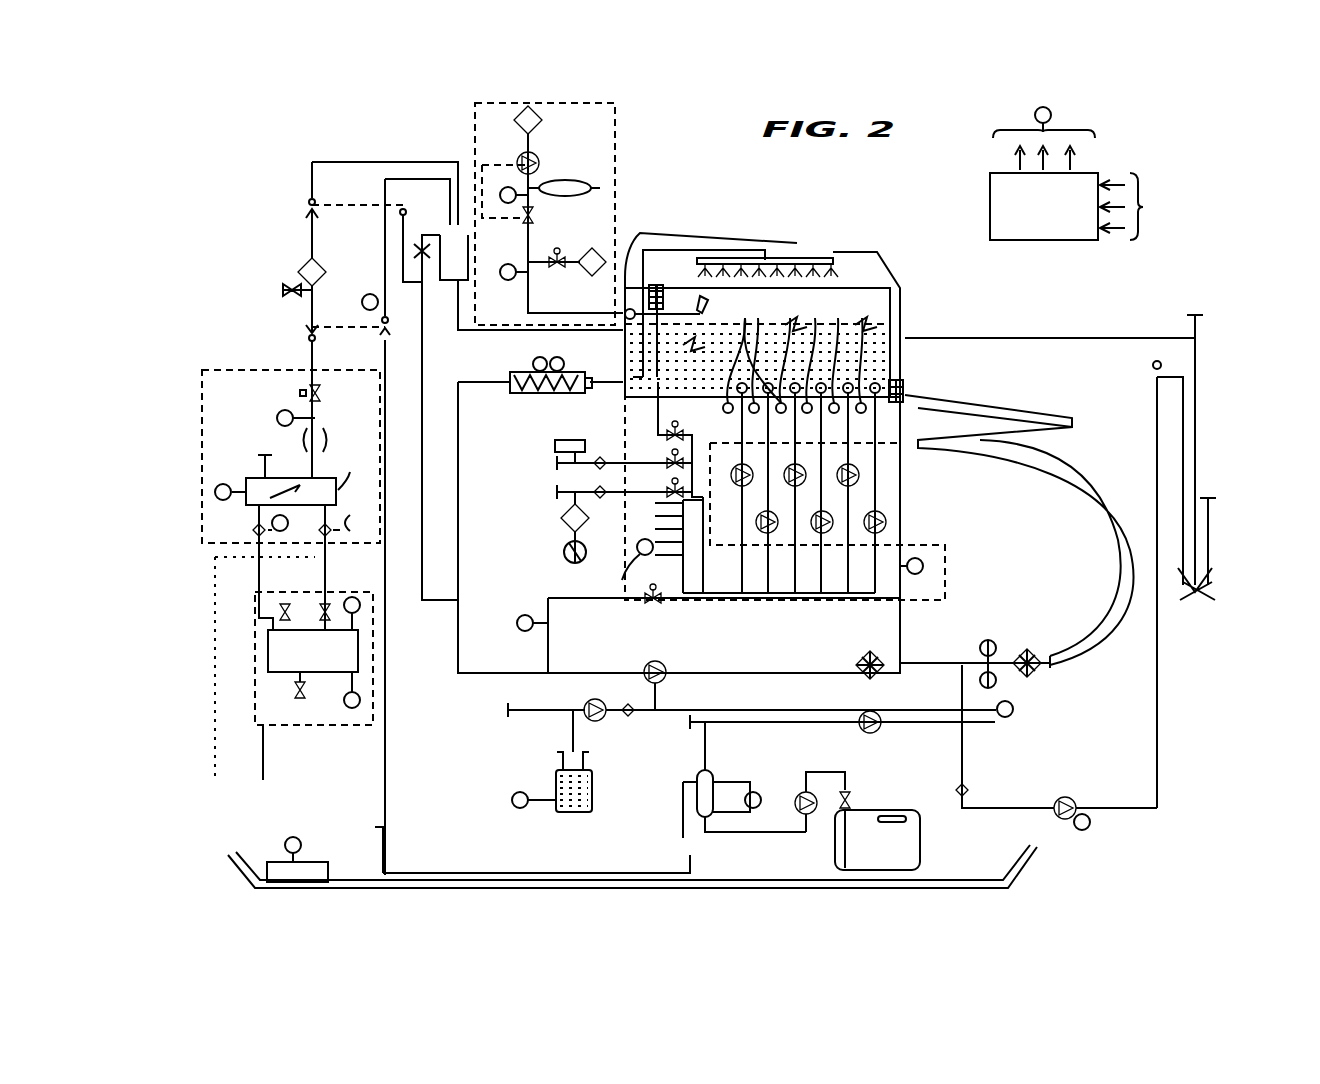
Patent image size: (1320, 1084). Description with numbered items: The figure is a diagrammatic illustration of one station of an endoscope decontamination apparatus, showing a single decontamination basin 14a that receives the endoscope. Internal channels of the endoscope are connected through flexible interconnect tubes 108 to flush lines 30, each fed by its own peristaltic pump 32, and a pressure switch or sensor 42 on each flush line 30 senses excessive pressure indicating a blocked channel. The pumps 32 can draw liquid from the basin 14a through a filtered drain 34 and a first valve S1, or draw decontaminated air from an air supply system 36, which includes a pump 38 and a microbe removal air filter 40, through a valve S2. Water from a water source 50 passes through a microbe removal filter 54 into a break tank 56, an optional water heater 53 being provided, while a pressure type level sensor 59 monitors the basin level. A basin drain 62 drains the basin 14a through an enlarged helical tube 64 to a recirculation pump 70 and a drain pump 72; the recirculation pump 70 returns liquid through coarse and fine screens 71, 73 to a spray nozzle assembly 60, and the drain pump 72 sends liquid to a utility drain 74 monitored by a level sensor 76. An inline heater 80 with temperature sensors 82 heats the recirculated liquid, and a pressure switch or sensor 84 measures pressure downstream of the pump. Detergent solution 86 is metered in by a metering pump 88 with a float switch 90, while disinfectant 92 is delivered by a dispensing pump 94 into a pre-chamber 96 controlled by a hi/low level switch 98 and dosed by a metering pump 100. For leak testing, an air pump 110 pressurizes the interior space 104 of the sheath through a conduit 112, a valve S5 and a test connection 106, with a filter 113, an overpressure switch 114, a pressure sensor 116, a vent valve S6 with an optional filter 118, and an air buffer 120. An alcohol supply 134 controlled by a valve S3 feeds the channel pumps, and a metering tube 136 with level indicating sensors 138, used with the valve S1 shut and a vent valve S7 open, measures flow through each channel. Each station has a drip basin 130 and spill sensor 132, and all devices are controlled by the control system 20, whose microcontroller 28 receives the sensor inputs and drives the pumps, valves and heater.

The decontamination basin 14a is at (898, 303).
The control system 20 is at (1066, 258).
The microcontroller 28 is at (1074, 173).
The flush lines 30 is at (735, 470).
The pumps 32 is at (738, 486).
The filtered drain 34 is at (905, 375).
The air supply system 36 is at (548, 580).
The pump 38 is at (564, 550).
The microbe removal air filter 40 is at (562, 515).
The pressure switch or sensor 42 is at (757, 330).
The water source 50 is at (204, 808).
The water heater 53 is at (338, 718).
The microbe removal filter 54 is at (322, 262).
The break tank 56 is at (452, 282).
The pressure type level sensor 59 is at (923, 566).
The spray nozzle assembly 60 is at (822, 255).
The basin drain 62 is at (905, 392).
The enlarged helical tube 64 is at (1068, 412).
The recirculation pump 70 is at (662, 662).
The coarse screen 71 is at (1033, 675).
The drain pump 72 is at (1072, 797).
The fine screen 73 is at (862, 675).
The utility drain 74 is at (1210, 585).
The level sensor 76 is at (993, 725).
The inline heater 80 is at (525, 393).
The temperature sensors 82 is at (533, 360).
The pressure switch or sensor 84 is at (520, 631).
The detergent solution 86 is at (593, 795).
The metering pump 88 is at (583, 705).
The float switch 90 is at (515, 808).
The disinfectant 92 is at (910, 838).
The dispensing pump 94 is at (800, 793).
The pre-chamber 96 is at (697, 812).
The hi/low level switch 98 is at (755, 790).
The metering pump 100 is at (875, 733).
The interior space 104 is at (628, 335).
The test connection 106 is at (692, 300).
The flexible interconnect tube 108 is at (698, 300).
The air pump 110 is at (540, 160).
The conduit 112 is at (600, 312).
The filter 113 is at (540, 118).
The overpressure switch 114 is at (505, 187).
The pressure sensor 116 is at (506, 280).
The filter 118 is at (600, 250).
The air buffer 120 is at (590, 184).
The drip basin 130 is at (350, 860).
The spill sensor 132 is at (320, 860).
The alcohol supply 134 is at (552, 447).
The metering tube 136 is at (700, 580).
The level indicating sensors 138 is at (620, 582).
The first valve S1 is at (648, 605).
The valve S2 is at (668, 495).
The valve S3 is at (668, 460).
The valve S5 is at (522, 218).
The valve S6 is at (560, 250).
The vent valve S7 is at (668, 432).